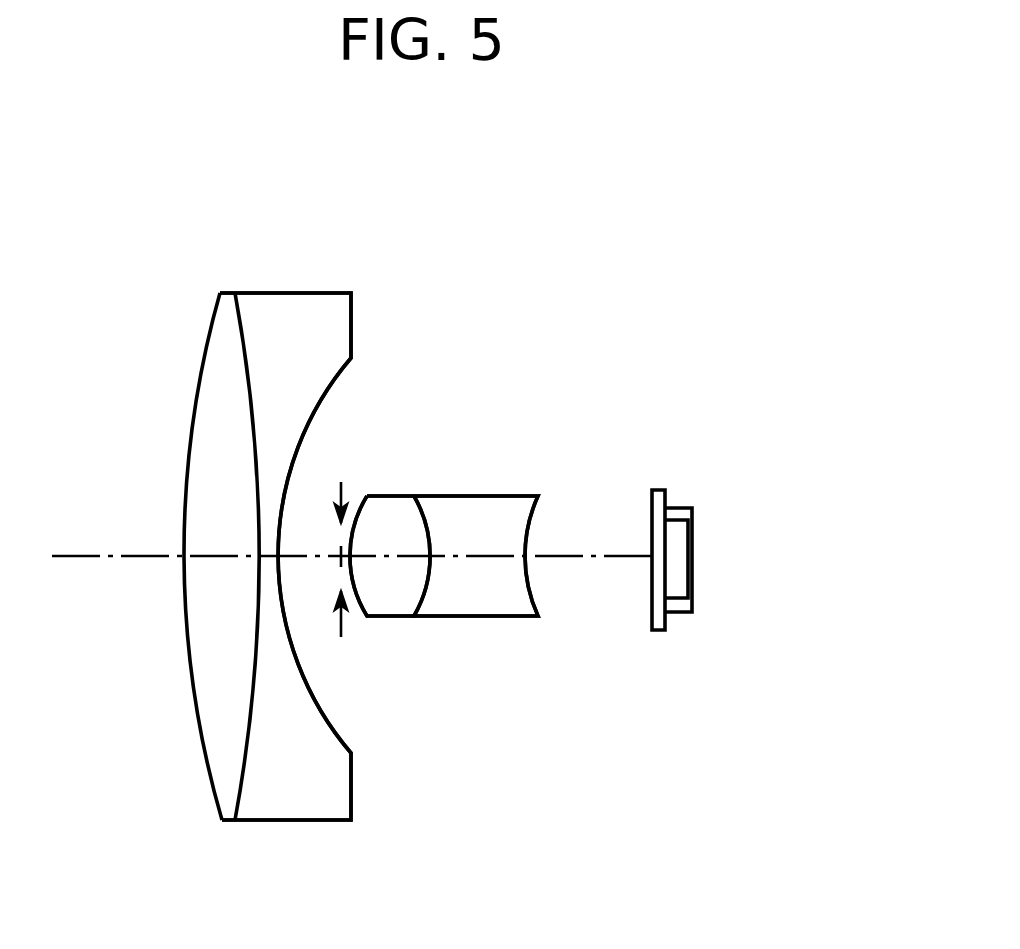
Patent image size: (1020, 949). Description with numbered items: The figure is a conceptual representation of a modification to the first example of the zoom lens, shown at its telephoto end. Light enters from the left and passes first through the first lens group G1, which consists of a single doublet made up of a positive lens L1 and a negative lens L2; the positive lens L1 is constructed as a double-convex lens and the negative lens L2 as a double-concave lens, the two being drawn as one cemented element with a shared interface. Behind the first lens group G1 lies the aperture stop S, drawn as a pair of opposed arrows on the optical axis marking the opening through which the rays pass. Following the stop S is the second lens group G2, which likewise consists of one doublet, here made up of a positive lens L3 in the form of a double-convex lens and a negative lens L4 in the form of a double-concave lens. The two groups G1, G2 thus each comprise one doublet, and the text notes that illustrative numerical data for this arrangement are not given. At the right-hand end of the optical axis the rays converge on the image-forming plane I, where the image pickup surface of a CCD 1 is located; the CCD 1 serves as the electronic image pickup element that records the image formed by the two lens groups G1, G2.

The positive lens L1 is at (232, 805).
The negative lens L2 is at (318, 803).
The positive lens L3 is at (392, 616).
The negative lens L4 is at (492, 616).
The first lens group G1 is at (340, 247).
The second lens group G2 is at (540, 247).
The aperture stop S is at (384, 247).
The image-forming plane I is at (650, 527).
The CCD 1 is at (687, 558).